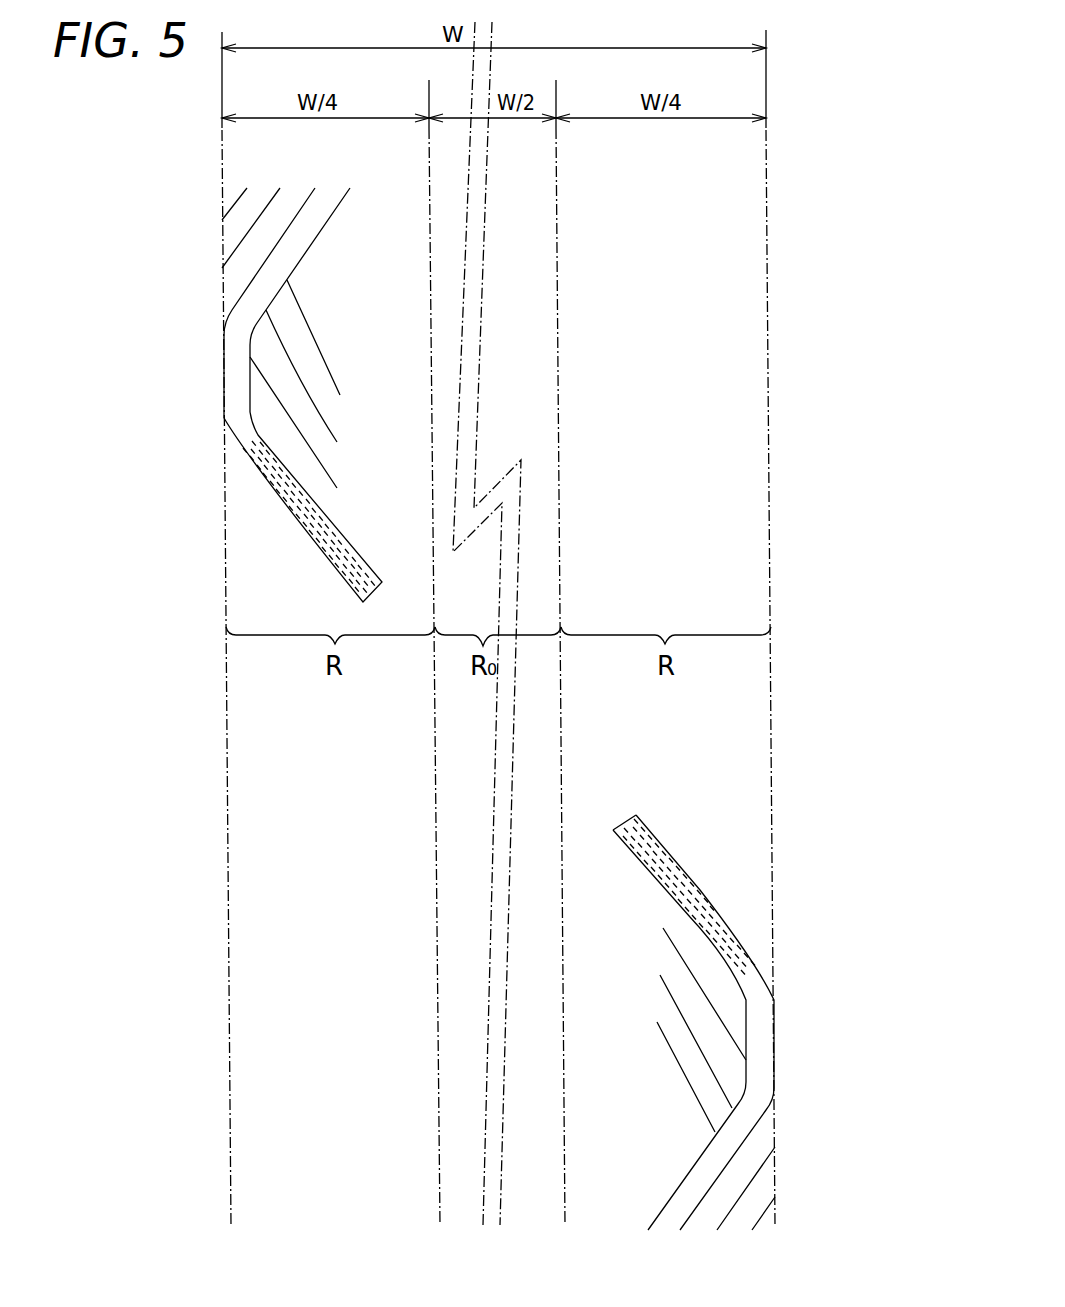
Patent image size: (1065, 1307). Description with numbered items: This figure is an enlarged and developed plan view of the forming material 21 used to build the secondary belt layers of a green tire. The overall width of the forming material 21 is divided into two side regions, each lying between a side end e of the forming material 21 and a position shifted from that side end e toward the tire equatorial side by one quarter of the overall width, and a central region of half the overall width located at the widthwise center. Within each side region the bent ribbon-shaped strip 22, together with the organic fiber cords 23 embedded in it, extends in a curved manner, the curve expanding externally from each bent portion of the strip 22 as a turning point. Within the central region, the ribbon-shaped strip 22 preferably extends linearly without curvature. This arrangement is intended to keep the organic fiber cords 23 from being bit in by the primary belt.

The forming material 21 is at (217, 543).
The ribbon-shaped strip 22 is at (242, 460).
The organic fiber cords 23 is at (335, 537).
The side end e is at (222, 162).